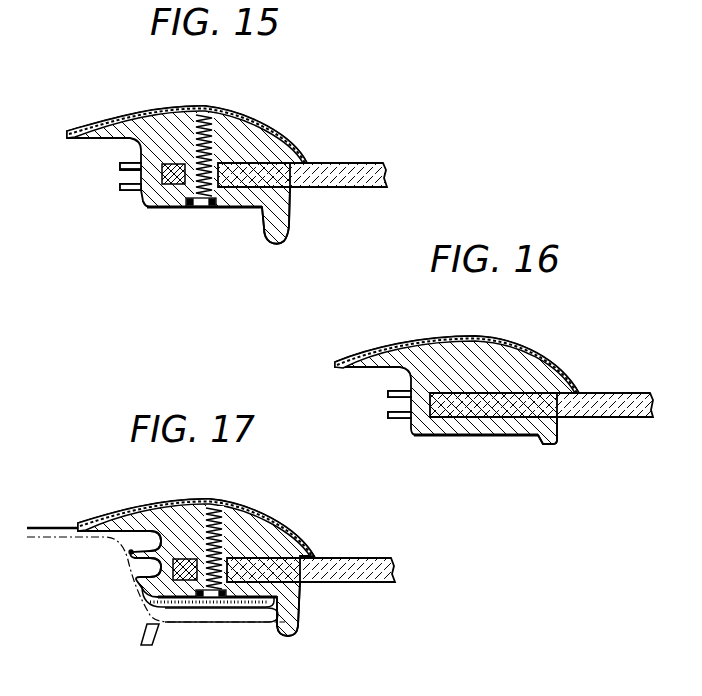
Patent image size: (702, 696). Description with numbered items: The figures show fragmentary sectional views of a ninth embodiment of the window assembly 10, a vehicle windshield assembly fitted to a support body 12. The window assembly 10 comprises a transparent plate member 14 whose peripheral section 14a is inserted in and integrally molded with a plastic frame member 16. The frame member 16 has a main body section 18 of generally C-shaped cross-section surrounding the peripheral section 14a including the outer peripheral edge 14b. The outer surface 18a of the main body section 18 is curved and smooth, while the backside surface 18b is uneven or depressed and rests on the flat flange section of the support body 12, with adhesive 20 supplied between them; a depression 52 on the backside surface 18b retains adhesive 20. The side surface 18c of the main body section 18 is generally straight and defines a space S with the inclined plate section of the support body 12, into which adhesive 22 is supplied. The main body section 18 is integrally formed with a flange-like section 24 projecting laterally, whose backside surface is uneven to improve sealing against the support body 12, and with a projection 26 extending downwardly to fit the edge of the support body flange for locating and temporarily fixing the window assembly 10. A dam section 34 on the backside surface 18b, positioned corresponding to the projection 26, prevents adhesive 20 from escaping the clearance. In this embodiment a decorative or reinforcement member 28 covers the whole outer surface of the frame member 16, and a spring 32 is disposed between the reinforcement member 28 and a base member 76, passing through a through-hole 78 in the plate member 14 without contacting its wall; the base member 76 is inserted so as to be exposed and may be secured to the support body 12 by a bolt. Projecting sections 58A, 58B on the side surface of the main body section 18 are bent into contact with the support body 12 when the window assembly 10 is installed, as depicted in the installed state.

In FIG. 15, the window assembly 10 is at (374, 121).
In FIG. 16, the window assembly 10 is at (617, 332).
In FIG. 17, the window assembly 10 is at (364, 522).
In FIG. 17, the support body 12 is at (220, 626).
In FIG. 15, the transparent plate member 14 is at (360, 188).
In FIG. 16, the transparent plate member 14 is at (628, 418).
In FIG. 17, the transparent plate member 14 is at (367, 583).
In FIG. 15, the peripheral section of the plate member 14a is at (293, 177).
In FIG. 15, the outer peripheral edge of the plate member 14b is at (180, 165).
In FIG. 15, the frame member 16 is at (307, 139).
In FIG. 16, the frame member 16 is at (567, 362).
In FIG. 17, the frame member 16 is at (310, 541).
In FIG. 15, the main body section 18 is at (225, 123).
In FIG. 16, the main body section 18 is at (508, 353).
In FIG. 17, the main body section 18 is at (237, 518).
In FIG. 15, the outer surface of the main body section 18a is at (180, 112).
In FIG. 15, the backside surface of the main body section 18b is at (148, 210).
In FIG. 15, the side surface of the main body section 18c is at (140, 186).
In FIG. 17, the adhesive 20 is at (252, 613).
In FIG. 17, the adhesive 22 is at (147, 595).
In FIG. 15, the flange-like section 24 is at (98, 129).
In FIG. 16, the flange-like section 24 is at (358, 355).
In FIG. 17, the flange-like section 24 is at (100, 520).
In FIG. 15, the projection 26 is at (277, 217).
In FIG. 17, the projection 26 is at (293, 617).
In FIG. 15, the decorative or reinforcement member 28 is at (155, 110).
In FIG. 16, the decorative or reinforcement member 28 is at (457, 337).
In FIG. 17, the decorative or reinforcement member 28 is at (163, 497).
In FIG. 15, the spring 32 is at (212, 147).
In FIG. 17, the spring 32 is at (223, 542).
In FIG. 16, the dam section 34 is at (553, 437).
In FIG. 15, the depression 52 is at (242, 208).
In FIG. 16, the depression 52 is at (513, 437).
In FIG. 17, the depression 52 is at (265, 617).
In FIG. 15, the projecting section 58A is at (117, 165).
In FIG. 16, the projecting section 58A is at (387, 393).
In FIG. 17, the projecting section 58A is at (130, 553).
In FIG. 15, the projecting section 58B is at (118, 187).
In FIG. 16, the projecting section 58B is at (388, 415).
In FIG. 17, the projecting section 58B is at (140, 565).
In FIG. 15, the base member 76 is at (190, 206).
In FIG. 17, the base member 76 is at (199, 600).
In FIG. 15, the through-hole 78 is at (170, 209).
In FIG. 17, the through-hole 78 is at (200, 582).
In FIG. 17, the space S is at (130, 542).